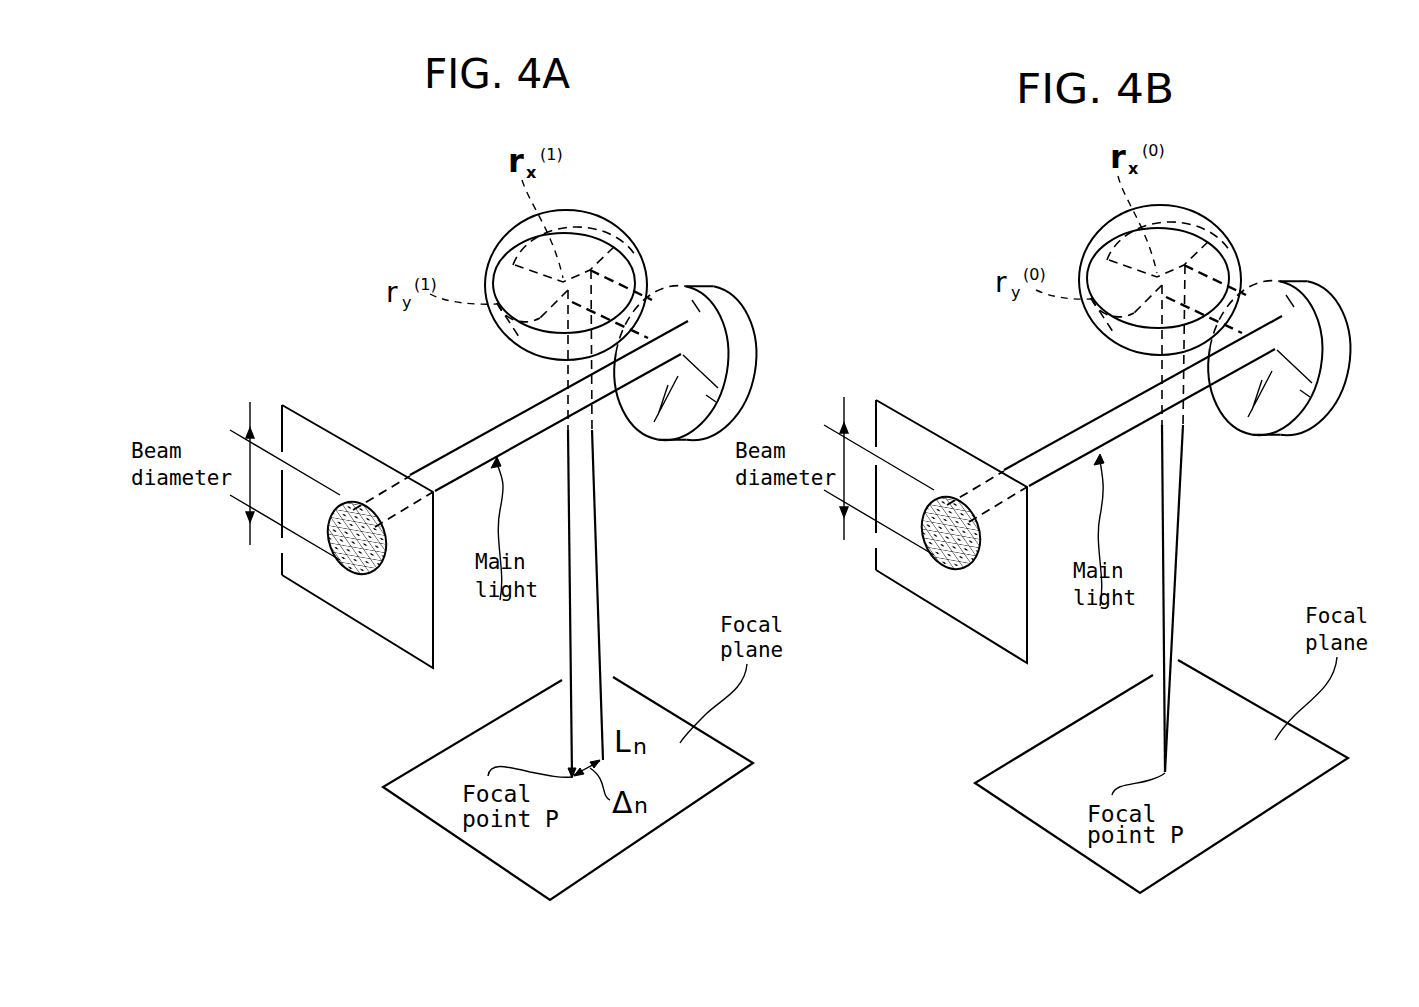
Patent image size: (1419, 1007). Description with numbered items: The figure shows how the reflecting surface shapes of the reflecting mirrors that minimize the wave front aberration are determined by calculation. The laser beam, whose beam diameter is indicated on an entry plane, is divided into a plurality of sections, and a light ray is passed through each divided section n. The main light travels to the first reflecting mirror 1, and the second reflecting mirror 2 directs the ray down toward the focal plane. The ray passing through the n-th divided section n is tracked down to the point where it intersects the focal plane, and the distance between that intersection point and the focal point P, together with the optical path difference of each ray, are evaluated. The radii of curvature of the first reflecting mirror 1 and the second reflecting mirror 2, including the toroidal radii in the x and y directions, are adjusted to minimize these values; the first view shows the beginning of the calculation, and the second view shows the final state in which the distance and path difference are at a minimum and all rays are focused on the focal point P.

In FIG. 4A, the first reflecting mirror 1 is at (720, 302).
In FIG. 4B, the first reflecting mirror 1 is at (1320, 315).
In FIG. 4A, the second reflecting mirror 2 is at (592, 220).
In FIG. 4B, the second reflecting mirror 2 is at (1195, 218).
In FIG. 4A, the divided section of the laser beam n is at (360, 508).
In FIG. 4B, the divided section of the laser beam n is at (954, 503).